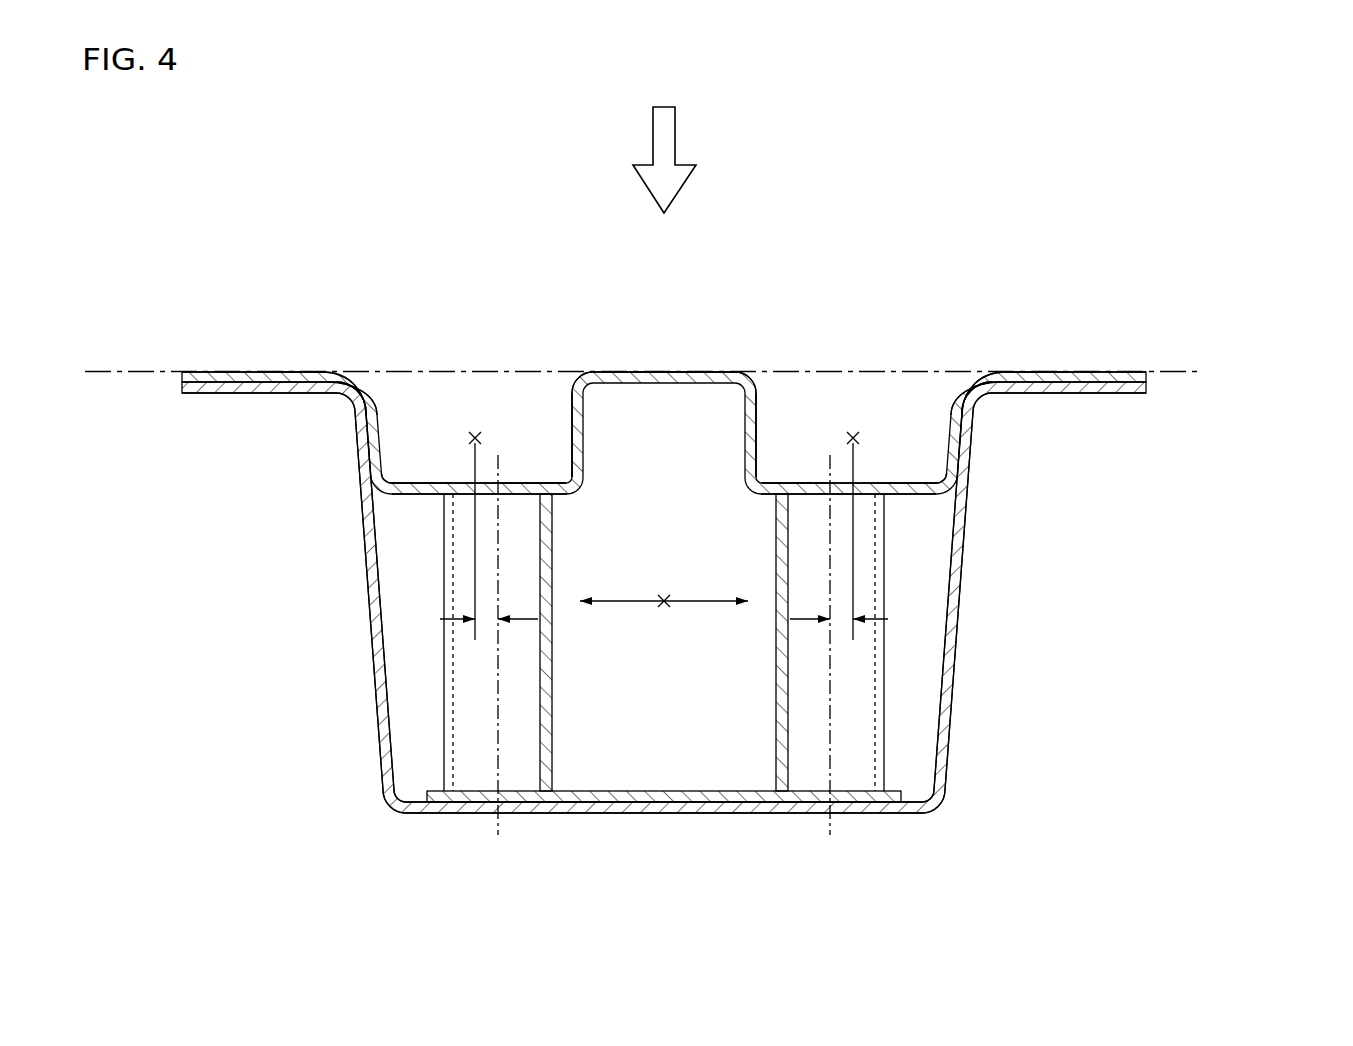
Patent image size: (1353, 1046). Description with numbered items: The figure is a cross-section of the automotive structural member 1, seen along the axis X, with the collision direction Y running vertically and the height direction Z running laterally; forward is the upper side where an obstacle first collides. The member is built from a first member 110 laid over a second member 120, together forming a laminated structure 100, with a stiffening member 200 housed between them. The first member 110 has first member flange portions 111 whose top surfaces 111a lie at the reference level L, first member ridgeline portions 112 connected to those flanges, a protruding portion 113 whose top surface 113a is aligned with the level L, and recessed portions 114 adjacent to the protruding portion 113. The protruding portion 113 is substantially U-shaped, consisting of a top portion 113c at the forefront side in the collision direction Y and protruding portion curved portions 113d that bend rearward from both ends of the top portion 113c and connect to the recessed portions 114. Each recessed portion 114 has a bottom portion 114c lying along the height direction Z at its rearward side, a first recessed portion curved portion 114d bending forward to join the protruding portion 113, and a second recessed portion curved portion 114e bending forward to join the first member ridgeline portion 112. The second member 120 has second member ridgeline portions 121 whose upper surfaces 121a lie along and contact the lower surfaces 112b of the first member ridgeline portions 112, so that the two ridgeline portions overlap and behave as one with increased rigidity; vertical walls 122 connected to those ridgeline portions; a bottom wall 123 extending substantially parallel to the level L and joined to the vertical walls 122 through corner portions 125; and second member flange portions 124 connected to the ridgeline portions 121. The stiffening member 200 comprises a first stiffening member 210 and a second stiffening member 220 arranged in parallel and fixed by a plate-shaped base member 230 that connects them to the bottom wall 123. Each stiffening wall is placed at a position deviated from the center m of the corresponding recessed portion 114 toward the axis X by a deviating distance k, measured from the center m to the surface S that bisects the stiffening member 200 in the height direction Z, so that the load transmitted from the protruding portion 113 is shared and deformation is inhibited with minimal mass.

The automotive structural member 1 is at (1022, 237).
The laminated metal sheet 100 is at (1250, 312).
The first member 110 is at (1118, 372).
The first member flange portion 111 is at (228, 371).
The top surface of first member flange portion 111a is at (290, 371).
The first member ridgeline portion 112 is at (380, 395).
The lower surface of first member ridgeline portion 112b is at (349, 394).
The protruding portion 113 is at (632, 371).
The top surface of protruding portion 113a is at (704, 371).
The top portion 113c is at (654, 371).
The protruding portion curved portion 113d is at (574, 400).
The recessed portion 114 is at (486, 482).
The bottom portion 114c is at (447, 482).
The first recessed portion curved portion 114d is at (560, 482).
The second recessed portion curved portion 114e is at (381, 491).
The second member 120 is at (1130, 393).
The second member ridgeline portion 121 is at (349, 391).
The upper surface of second member ridgeline portion 121a is at (343, 374).
The vertical wall 122 is at (375, 684).
The bottom wall 123 is at (520, 813).
The second member flange portion 124 is at (212, 393).
The corner portion 125 is at (389, 800).
The stiffening member 200 is at (732, 895).
The first stiffening member 210 is at (560, 714).
The second stiffening member 220 is at (777, 733).
The base member 230 is at (745, 792).
The collision direction Y is at (675, 125).
The level L is at (116, 370).
The surface bisecting the stiffening member S is at (497, 778).
The center of recessed portion m is at (475, 430).
The deviating distance k is at (664, 603).
The height direction Z is at (632, 600).
The axis X is at (668, 596).